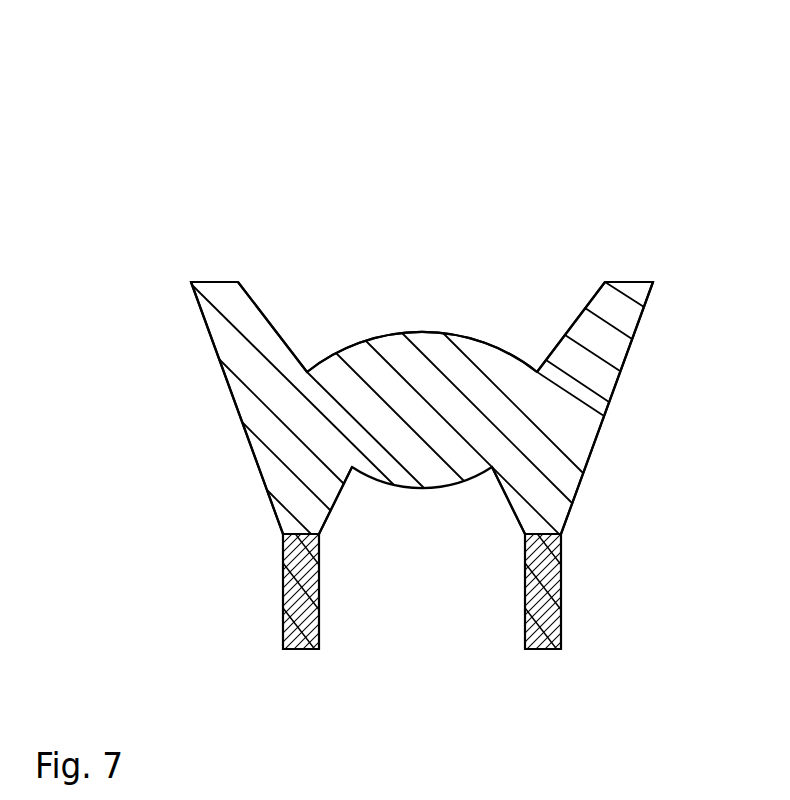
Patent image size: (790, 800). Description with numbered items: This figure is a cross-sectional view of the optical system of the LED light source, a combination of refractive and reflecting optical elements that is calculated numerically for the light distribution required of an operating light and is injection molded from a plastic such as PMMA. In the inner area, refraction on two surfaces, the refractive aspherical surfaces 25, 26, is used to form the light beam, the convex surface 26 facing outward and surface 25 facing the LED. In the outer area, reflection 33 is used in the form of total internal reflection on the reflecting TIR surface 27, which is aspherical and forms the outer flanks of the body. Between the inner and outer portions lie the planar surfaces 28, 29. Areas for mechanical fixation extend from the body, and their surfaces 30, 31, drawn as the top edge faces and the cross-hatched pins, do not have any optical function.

The refractive aspherical surface 25 is at (424, 491).
The refractive aspherical surface 26 is at (427, 327).
The reflecting TIR surface 27 is at (254, 468).
The planar surface 28 is at (336, 510).
The planar surface 29 is at (262, 307).
The surface 30 is at (211, 278).
The surface 31 is at (303, 655).
The reflection 33 is at (641, 799).